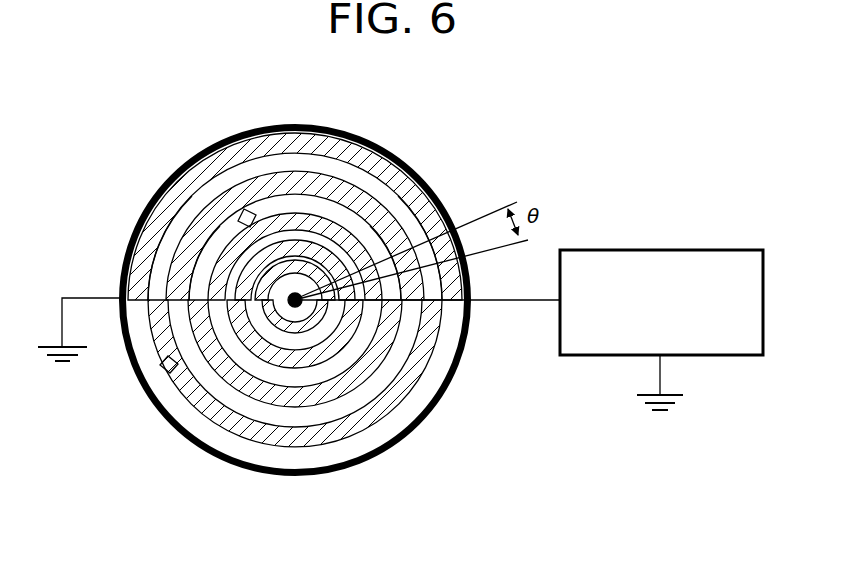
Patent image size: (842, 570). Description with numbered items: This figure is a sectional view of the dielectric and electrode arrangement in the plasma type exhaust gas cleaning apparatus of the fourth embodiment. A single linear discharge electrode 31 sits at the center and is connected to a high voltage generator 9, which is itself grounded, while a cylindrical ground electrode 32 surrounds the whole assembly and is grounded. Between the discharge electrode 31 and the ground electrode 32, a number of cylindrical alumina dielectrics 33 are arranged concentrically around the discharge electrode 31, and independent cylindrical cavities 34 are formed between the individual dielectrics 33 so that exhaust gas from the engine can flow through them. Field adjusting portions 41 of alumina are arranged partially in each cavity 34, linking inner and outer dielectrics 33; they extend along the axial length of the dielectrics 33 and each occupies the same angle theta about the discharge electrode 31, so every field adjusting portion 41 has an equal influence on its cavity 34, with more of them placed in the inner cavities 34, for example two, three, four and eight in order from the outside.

The high voltage generator 9 is at (710, 250).
The discharge electrode 31 is at (418, 177).
The ground electrode 32 is at (303, 122).
The dielectric 33 is at (197, 233).
The cavity 34 is at (362, 220).
The field adjusting portion 41 is at (240, 218).